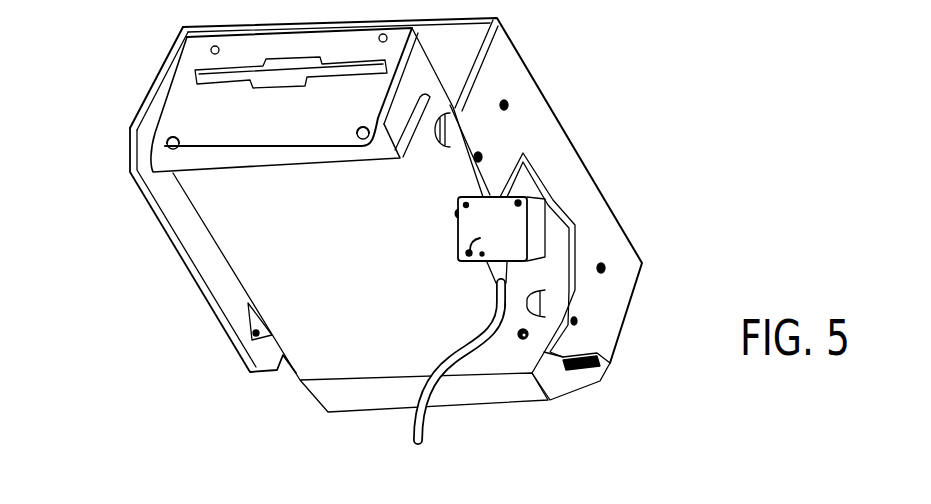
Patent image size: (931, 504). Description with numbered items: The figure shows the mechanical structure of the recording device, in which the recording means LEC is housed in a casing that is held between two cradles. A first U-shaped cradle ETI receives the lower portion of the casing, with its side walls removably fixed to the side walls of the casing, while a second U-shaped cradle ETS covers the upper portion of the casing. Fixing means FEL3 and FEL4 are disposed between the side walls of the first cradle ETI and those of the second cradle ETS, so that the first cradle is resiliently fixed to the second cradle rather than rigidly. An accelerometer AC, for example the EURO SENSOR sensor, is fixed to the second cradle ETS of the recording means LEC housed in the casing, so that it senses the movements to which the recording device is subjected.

The recording means LEC is at (192, 112).
The second U-shaped cradle ETS is at (528, 103).
The first U-shaped cradle ETI is at (233, 218).
The fixing means FEL4 is at (437, 143).
The accelerometer AC is at (458, 262).
The fixing means FEL3 is at (548, 295).